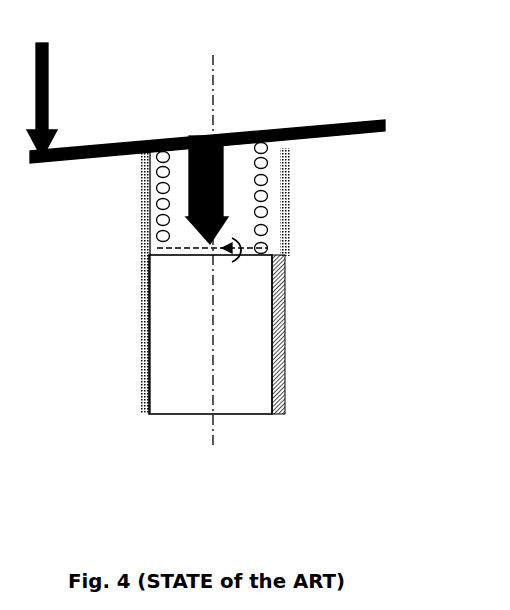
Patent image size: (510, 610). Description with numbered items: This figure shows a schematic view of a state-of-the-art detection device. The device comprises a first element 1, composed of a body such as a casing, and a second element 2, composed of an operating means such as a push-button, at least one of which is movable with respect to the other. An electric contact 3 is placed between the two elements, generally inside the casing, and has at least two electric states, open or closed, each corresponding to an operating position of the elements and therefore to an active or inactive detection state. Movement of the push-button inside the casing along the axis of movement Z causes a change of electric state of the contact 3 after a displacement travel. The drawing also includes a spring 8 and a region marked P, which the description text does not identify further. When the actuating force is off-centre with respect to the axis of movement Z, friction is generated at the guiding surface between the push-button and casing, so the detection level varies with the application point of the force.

The first element 1 is at (287, 365).
The second element 2 is at (283, 128).
The electric contact 3 is at (233, 297).
The spring 8 is at (283, 220).
The pressure chamber P is at (285, 267).
The axis of movement Z is at (213, 90).